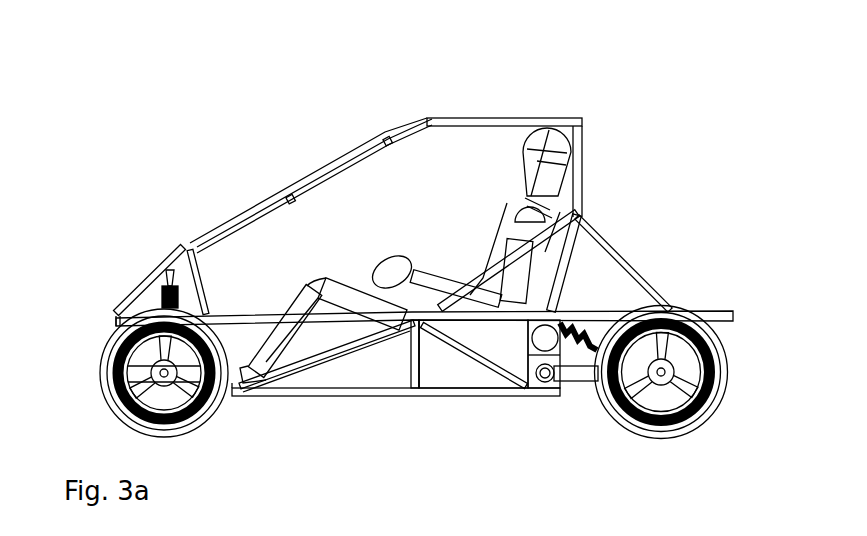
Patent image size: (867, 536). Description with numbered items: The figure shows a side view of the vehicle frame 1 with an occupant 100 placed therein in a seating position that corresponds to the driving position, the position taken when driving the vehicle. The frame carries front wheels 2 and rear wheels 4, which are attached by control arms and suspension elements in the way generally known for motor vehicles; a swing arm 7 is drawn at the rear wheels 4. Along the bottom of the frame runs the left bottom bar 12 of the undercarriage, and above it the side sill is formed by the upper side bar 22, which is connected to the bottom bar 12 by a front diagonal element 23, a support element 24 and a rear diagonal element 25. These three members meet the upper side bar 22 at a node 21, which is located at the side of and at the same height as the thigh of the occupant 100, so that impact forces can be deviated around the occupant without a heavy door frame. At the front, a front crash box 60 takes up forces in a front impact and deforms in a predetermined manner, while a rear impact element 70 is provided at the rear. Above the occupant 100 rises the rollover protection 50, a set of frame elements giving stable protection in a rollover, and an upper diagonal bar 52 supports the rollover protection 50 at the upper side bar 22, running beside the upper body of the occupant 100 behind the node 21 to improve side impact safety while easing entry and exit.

The vehicle frame 1 is at (146, 151).
The front wheels 2 is at (127, 413).
The rear wheels 4 is at (635, 424).
The rear swing arm 7 is at (579, 385).
The left bottom bar 12 is at (329, 398).
The node 21 is at (407, 379).
The upper side bar 22 is at (340, 382).
The front diagonal element 23 is at (298, 380).
The support element 24 is at (416, 372).
The rear diagonal element 25 is at (480, 372).
The rollover protection 50 is at (519, 106).
The upper diagonal bar 52 is at (583, 216).
The front crash box 60 is at (112, 312).
The rear impact element 70 is at (721, 317).
The occupant 100 is at (514, 217).